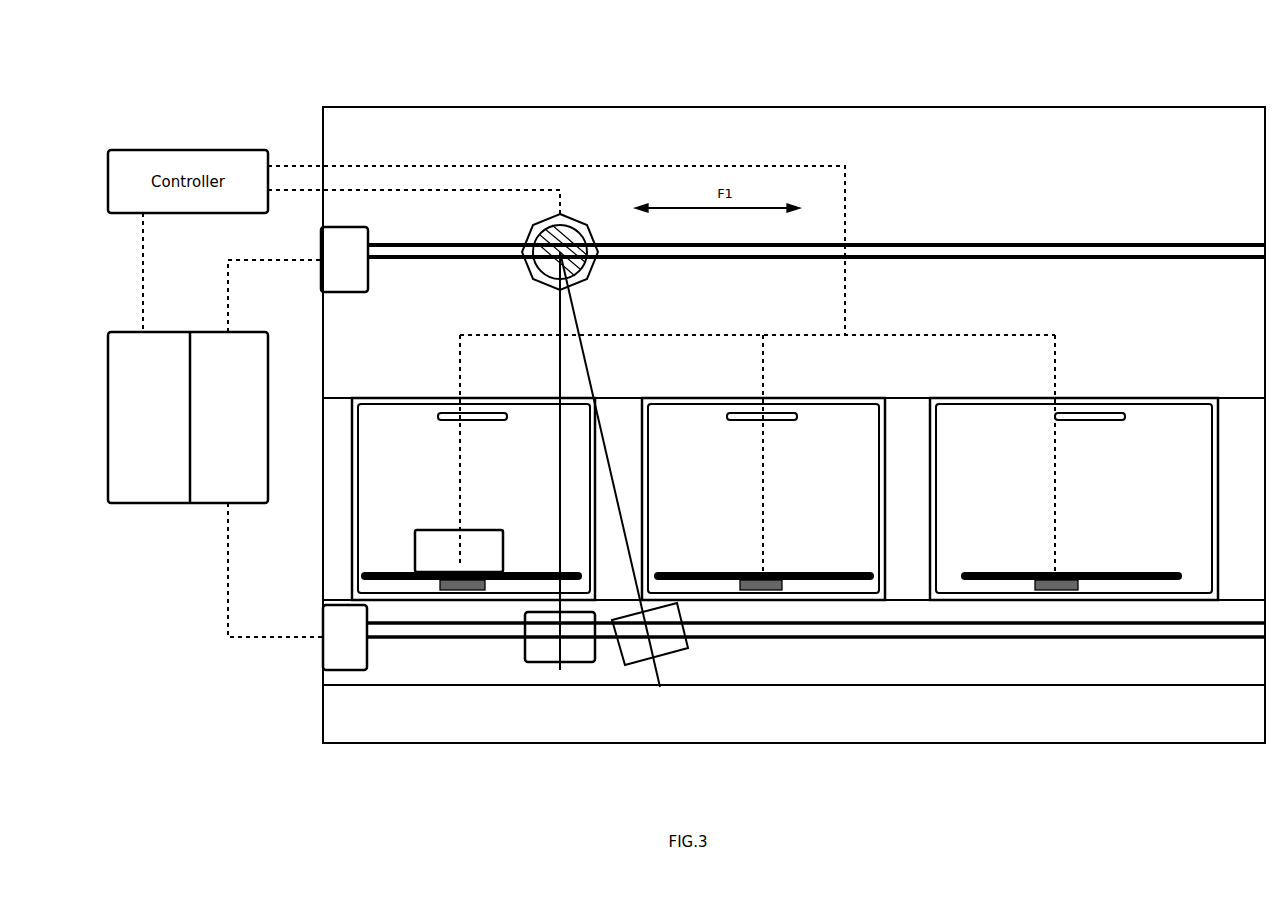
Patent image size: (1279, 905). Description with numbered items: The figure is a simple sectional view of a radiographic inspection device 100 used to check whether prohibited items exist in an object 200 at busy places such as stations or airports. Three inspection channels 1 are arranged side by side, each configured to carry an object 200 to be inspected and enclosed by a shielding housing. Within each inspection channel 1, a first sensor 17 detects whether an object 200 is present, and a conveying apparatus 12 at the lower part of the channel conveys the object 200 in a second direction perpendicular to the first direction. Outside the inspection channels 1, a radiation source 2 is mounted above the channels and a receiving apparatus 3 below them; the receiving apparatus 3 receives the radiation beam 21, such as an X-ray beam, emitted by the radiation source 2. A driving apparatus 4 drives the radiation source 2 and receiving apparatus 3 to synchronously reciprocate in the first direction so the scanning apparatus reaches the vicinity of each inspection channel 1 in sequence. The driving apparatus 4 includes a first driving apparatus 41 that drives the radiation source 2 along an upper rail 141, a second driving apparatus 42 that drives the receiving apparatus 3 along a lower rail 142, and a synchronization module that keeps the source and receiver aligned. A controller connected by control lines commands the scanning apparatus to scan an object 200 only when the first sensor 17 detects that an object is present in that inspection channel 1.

The radiographic inspection device 100 is at (760, 12).
The inspection channel 1 is at (1005, 488).
The conveying apparatus 12 is at (1105, 585).
The first sensor 17 is at (760, 585).
The radiation source 2 is at (583, 225).
The radiation beam 21 is at (565, 285).
The receiving apparatus 3 is at (570, 655).
The driving apparatus 4 is at (152, 503).
The first driving apparatus 41 is at (355, 265).
The second driving apparatus 42 is at (345, 643).
The first guide rail 141 is at (1046, 243).
The second guide rail 142 is at (822, 640).
The object 200 is at (440, 525).